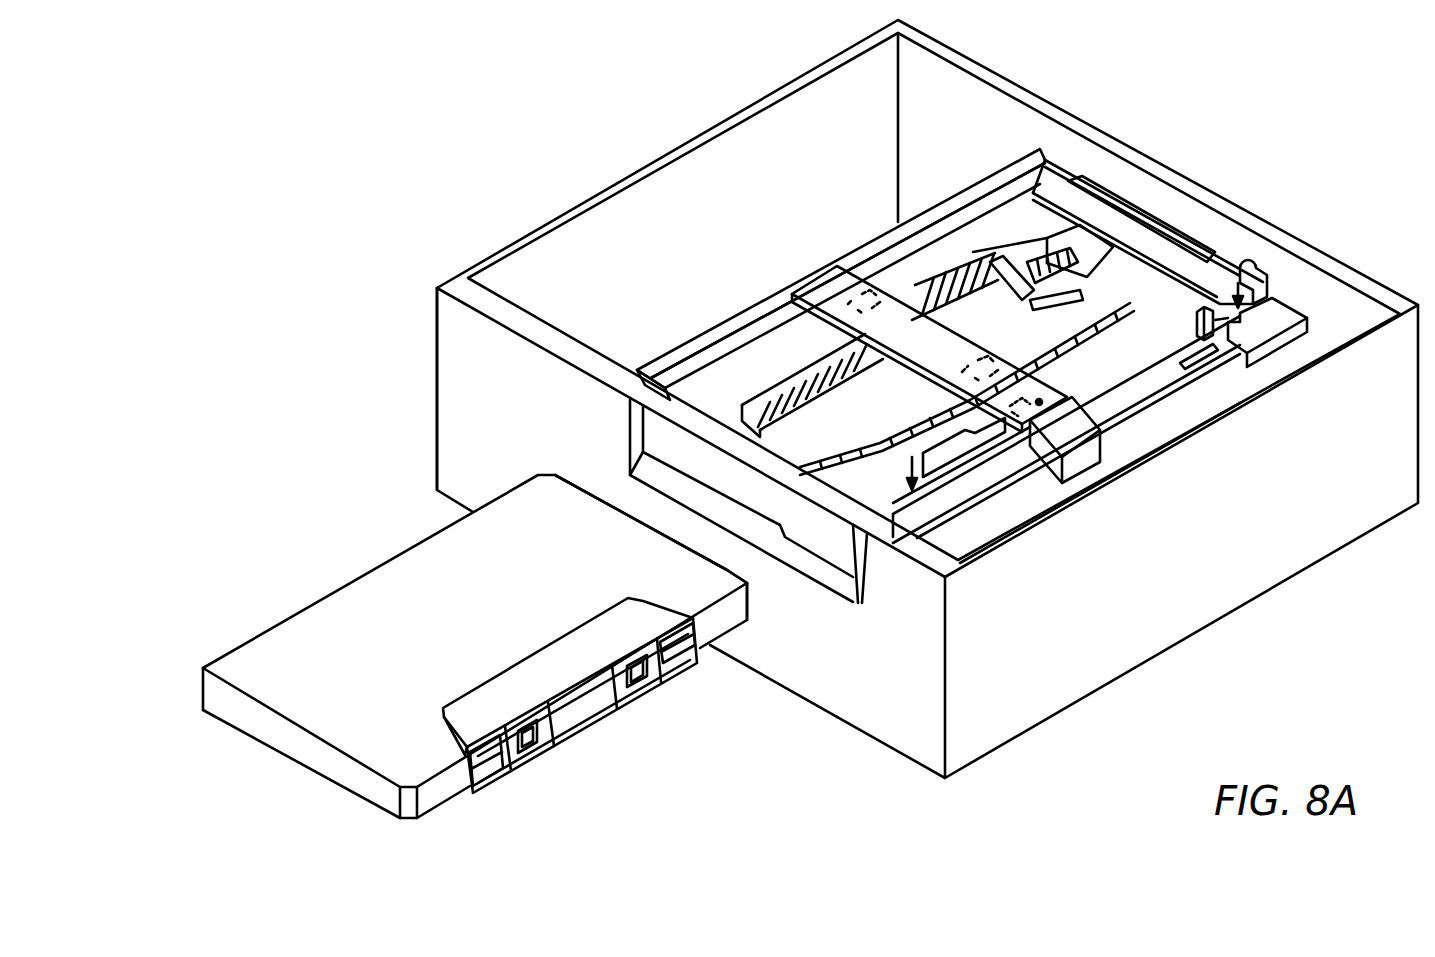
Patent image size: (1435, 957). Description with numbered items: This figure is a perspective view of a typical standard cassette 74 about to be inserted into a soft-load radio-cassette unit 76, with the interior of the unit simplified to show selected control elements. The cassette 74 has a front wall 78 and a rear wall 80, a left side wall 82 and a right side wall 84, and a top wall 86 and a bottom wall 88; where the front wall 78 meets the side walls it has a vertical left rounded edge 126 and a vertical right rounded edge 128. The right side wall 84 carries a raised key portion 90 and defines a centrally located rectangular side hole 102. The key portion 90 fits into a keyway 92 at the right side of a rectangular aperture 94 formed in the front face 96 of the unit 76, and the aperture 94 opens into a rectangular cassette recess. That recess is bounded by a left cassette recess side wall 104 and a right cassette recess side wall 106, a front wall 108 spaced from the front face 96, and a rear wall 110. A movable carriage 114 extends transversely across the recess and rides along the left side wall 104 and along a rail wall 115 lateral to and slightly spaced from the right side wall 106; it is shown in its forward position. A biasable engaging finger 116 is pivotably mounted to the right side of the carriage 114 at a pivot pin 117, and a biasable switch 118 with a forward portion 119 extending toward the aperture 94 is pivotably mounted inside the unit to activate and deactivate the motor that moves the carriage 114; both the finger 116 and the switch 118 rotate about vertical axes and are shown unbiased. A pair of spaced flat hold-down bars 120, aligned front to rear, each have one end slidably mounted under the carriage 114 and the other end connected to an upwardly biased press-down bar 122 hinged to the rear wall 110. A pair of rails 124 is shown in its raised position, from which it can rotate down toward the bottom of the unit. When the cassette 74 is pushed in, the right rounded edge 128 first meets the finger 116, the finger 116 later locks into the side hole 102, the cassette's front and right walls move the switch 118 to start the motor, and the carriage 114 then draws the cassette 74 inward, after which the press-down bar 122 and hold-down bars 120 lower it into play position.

The standard cassette 74 is at (586, 503).
The soft-load radio-cassette unit 76 is at (437, 265).
The front wall 78 is at (717, 565).
The rear wall 80 is at (311, 754).
The left side wall 82 is at (203, 686).
The right side wall 84 is at (437, 790).
The top wall 86 is at (300, 635).
The bottom wall 88 is at (243, 738).
The raised key portion 90 is at (563, 696).
The keyway 92 is at (840, 550).
The rectangular aperture 94 is at (670, 441).
The front face 96 is at (478, 405).
The side hole 102 is at (590, 715).
The left cassette recess side wall 104 is at (746, 333).
The right cassette recess side wall 106 is at (1105, 405).
The front wall of cassette recess 108 is at (690, 403).
The rear wall of cassette recess 110 is at (1155, 215).
The movable carriage 114 is at (833, 288).
The rail wall 115 is at (1010, 485).
The biasable engaging finger 116 is at (977, 440).
The pivot pin 117 is at (1039, 401).
The biasable switch 118 is at (1233, 337).
The forward portion 119 is at (1183, 345).
The hold-down bars 120 is at (1023, 345).
The press-down bar 122 is at (1140, 235).
The rails 124 is at (920, 428).
The left rounded edge 126 is at (548, 476).
The right rounded edge 128 is at (747, 600).